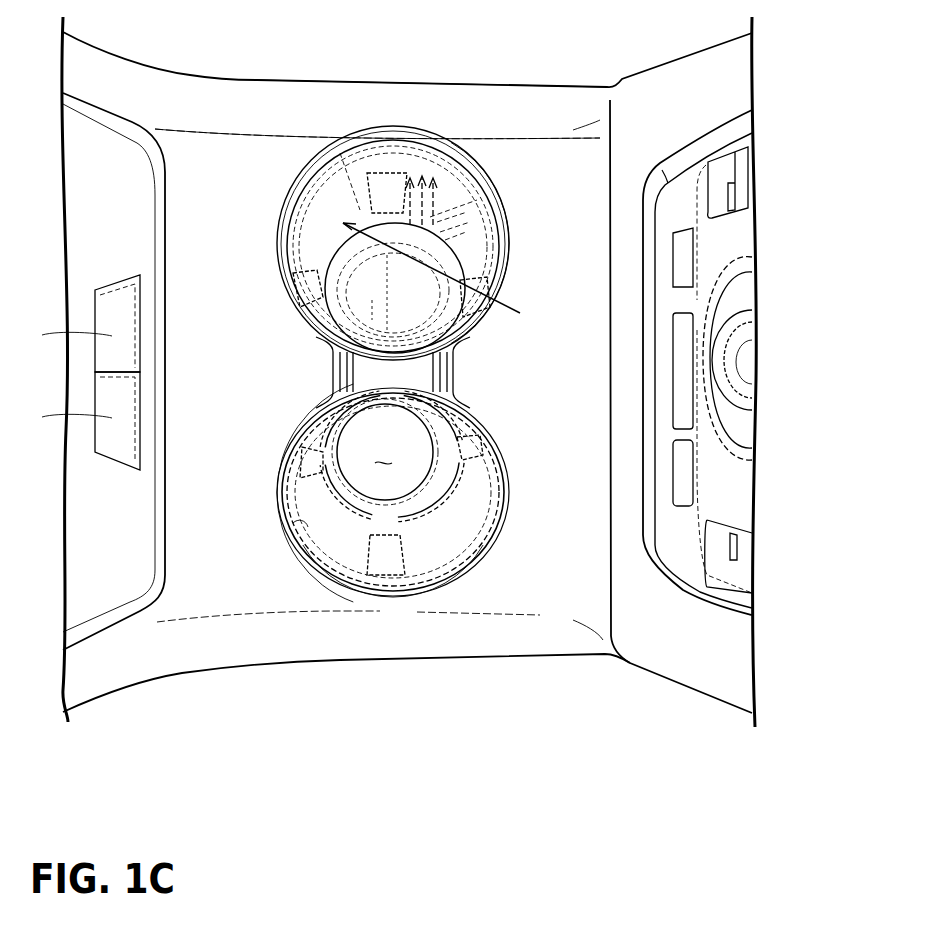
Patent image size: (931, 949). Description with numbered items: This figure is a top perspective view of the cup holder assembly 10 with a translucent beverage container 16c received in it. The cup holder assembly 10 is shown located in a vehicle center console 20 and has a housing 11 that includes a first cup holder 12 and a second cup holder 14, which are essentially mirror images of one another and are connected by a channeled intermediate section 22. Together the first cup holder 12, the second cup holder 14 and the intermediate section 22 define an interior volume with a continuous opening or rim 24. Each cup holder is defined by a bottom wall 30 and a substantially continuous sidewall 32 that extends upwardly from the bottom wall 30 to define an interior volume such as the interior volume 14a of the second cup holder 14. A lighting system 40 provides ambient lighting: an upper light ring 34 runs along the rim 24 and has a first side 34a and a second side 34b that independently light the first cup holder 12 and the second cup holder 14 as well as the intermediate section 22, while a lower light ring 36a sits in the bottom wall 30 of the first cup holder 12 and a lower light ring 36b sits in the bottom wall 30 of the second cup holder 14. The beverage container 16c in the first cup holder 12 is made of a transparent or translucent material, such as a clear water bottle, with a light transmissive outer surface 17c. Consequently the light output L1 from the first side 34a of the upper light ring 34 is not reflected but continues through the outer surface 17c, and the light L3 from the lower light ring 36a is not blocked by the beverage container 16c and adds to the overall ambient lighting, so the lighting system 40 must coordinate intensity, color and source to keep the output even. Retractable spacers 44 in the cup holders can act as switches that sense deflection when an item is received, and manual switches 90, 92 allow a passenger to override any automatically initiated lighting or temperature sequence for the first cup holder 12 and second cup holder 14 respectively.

The cup holder assembly 10 is at (321, 119).
The housing 11 is at (257, 165).
The first cup holder 12 is at (496, 156).
The second cup holder 14 is at (292, 583).
The interior volume 14a is at (471, 523).
The beverage container 16c is at (487, 198).
The light transmissive outer surface 17c is at (285, 190).
The vehicle center console 20 is at (435, 66).
The intermediate section 22 is at (415, 372).
The rim 24 is at (308, 527).
The bottom wall 30 is at (385, 452).
The sidewall 32 is at (457, 538).
The upper light ring 34 is at (492, 433).
The first side 34a is at (505, 230).
The second side 34b is at (313, 568).
The lower light ring 36a is at (345, 285).
The lower light ring 36b is at (425, 480).
The lighting system 40 is at (316, 367).
The retractable spacers 44 is at (475, 455).
The switch 90 is at (118, 330).
The switch 92 is at (110, 412).
The light output L1 is at (492, 290).
The light L3 is at (423, 205).